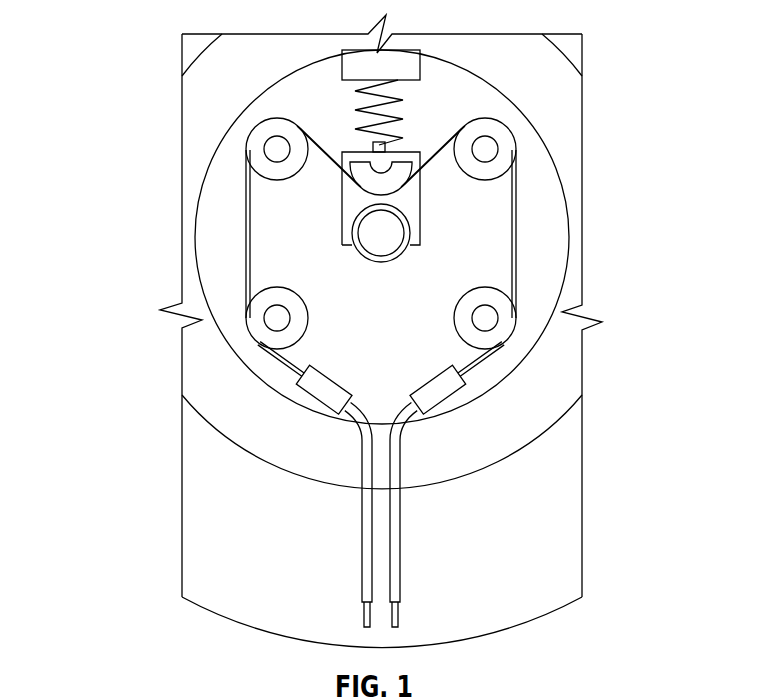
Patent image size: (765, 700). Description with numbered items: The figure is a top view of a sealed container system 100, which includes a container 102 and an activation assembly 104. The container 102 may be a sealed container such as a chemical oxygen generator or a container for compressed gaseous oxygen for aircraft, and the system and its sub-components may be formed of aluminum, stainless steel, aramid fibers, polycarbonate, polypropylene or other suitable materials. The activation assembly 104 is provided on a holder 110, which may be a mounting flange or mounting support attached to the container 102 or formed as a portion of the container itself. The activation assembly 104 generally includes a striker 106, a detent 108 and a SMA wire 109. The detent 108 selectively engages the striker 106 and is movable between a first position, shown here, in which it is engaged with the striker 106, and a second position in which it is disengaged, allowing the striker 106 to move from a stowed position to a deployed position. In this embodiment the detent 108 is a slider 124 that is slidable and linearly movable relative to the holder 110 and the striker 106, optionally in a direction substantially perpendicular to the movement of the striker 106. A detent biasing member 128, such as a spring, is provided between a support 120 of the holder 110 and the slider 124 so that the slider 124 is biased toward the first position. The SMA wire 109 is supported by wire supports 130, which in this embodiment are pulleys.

The sealed container system 100 is at (155, 455).
The container 102 is at (570, 494).
The activation assembly 104 is at (126, 198).
The striker 106 is at (382, 250).
The detent 108 is at (367, 186).
The SMA wire 109 is at (513, 214).
The holder 110 is at (558, 232).
The support 120 is at (402, 57).
The slider 124 is at (408, 212).
The detent biasing member 128 is at (400, 115).
The wire supports 130 is at (256, 157).